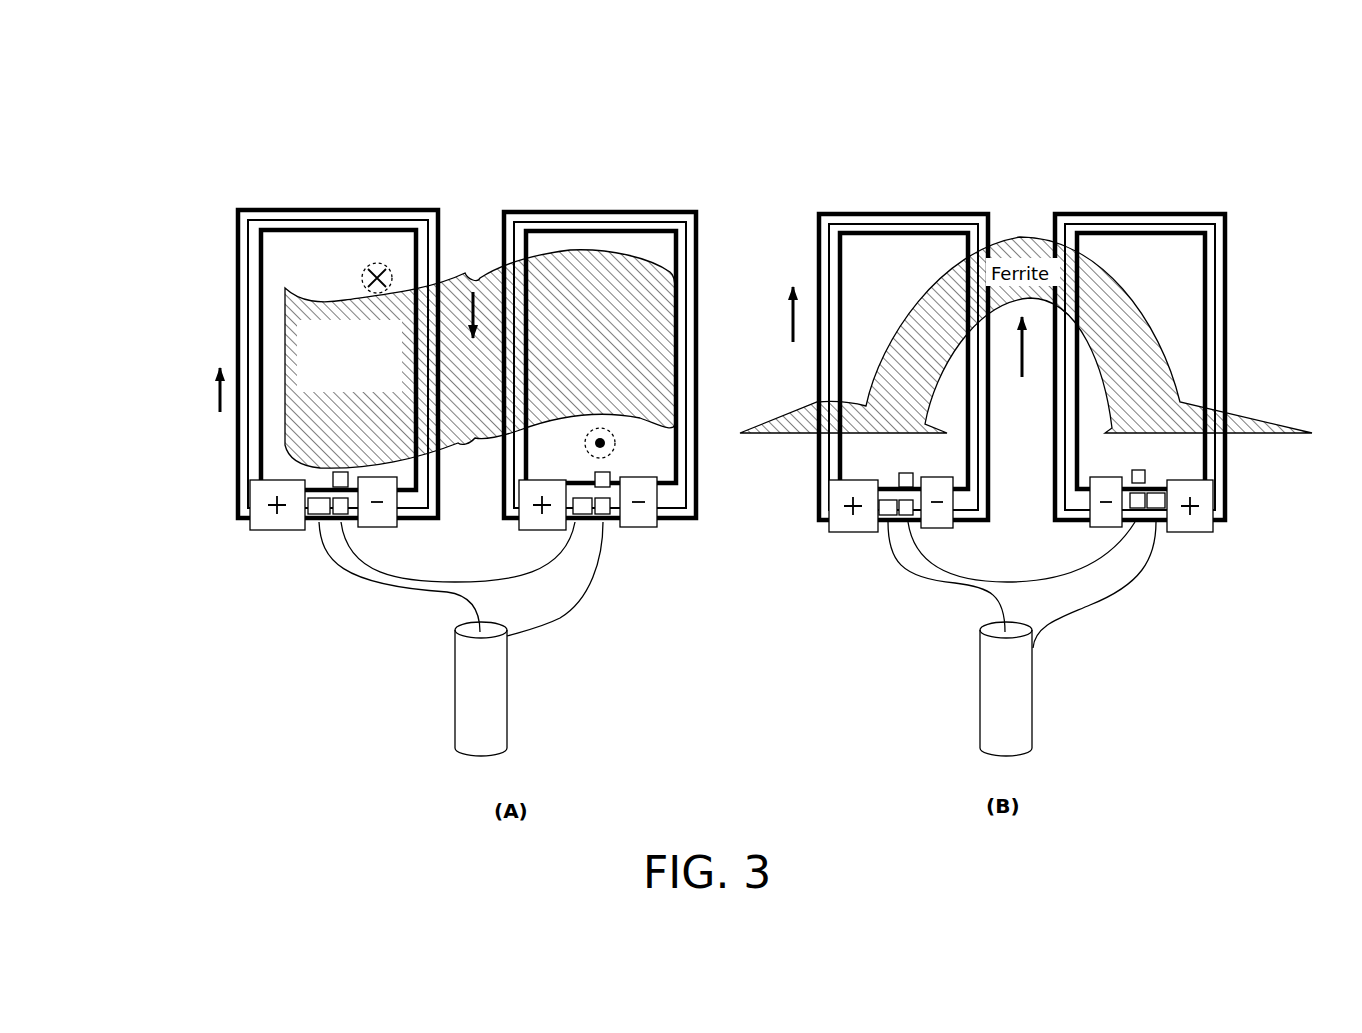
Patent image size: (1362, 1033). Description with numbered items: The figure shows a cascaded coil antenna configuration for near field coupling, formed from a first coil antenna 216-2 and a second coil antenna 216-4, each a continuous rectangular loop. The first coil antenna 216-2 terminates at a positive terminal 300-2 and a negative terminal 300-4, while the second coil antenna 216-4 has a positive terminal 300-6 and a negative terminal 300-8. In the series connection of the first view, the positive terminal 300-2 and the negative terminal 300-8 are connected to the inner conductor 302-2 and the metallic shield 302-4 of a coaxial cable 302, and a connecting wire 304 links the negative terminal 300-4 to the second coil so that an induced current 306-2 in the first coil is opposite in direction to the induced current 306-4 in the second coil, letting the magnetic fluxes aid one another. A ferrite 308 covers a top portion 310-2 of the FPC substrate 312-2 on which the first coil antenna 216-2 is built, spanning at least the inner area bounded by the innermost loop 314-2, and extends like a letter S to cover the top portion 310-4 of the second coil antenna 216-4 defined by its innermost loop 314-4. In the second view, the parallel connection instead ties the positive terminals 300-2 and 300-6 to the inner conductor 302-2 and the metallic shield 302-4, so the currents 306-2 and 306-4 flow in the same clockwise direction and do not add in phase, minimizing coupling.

In FIG. 3A, the first coil antenna 216-2 is at (275, 203).
In FIG. 3B, the first coil antenna 216-2 is at (862, 199).
In FIG. 3A, the second coil antenna 216-4 is at (535, 203).
In FIG. 3B, the second coil antenna 216-4 is at (1127, 199).
In FIG. 3A, the positive terminal 300-2 is at (290, 538).
In FIG. 3B, the positive terminal 300-2 is at (855, 534).
In FIG. 3A, the negative terminal 300-4 is at (385, 538).
In FIG. 3B, the negative terminal 300-4 is at (940, 534).
In FIG. 3A, the positive terminal 300-6 is at (531, 539).
In FIG. 3B, the positive terminal 300-6 is at (1190, 538).
In FIG. 3A, the negative terminal 300-8 is at (633, 538).
In FIG. 3B, the negative terminal 300-8 is at (1110, 534).
In FIG. 3A, the coaxial cable 302 is at (480, 759).
In FIG. 3B, the coaxial cable 302 is at (1050, 741).
In FIG. 3A, the inner conductor 302-2 is at (445, 596).
In FIG. 3A, the metallic shield 302-4 is at (520, 640).
In FIG. 3A, the connecting wire 304 is at (522, 580).
In FIG. 3A, the induced current 306-2 is at (186, 390).
In FIG. 3B, the induced current 306-2 is at (785, 338).
In FIG. 3A, the induced current 306-4 is at (468, 338).
In FIG. 3B, the induced current 306-4 is at (1022, 366).
In FIG. 3A, the ferrite 308 is at (311, 331).
In FIG. 3A, the top portion 310-2 is at (340, 297).
In FIG. 3A, the top portion 310-4 is at (634, 249).
In FIG. 3A, the FPC substrate 312-2 is at (326, 273).
In FIG. 3A, the innermost loop 314-2 is at (414, 248).
In FIG. 3A, the innermost loop 314-4 is at (664, 277).